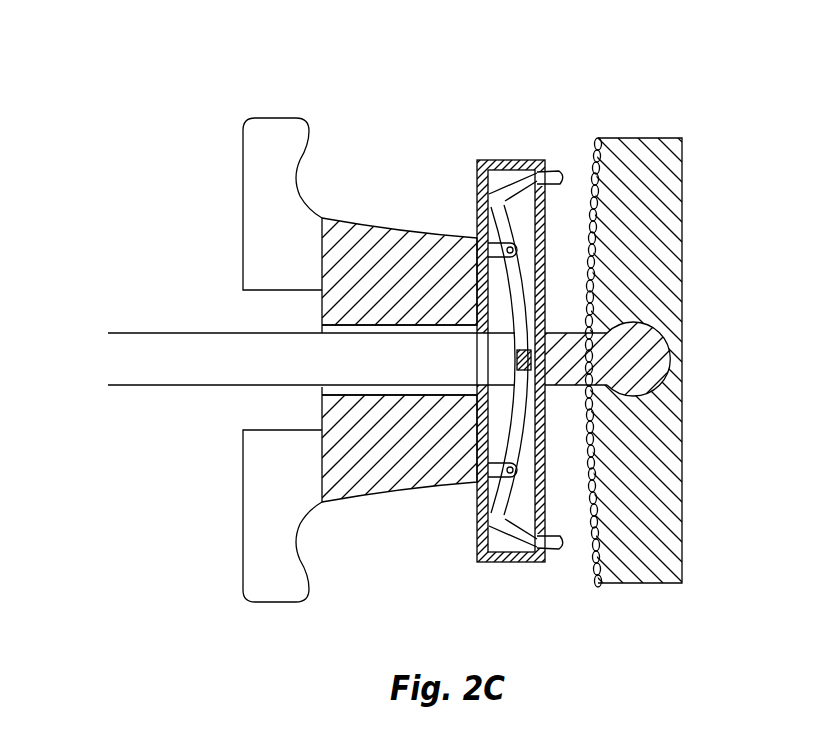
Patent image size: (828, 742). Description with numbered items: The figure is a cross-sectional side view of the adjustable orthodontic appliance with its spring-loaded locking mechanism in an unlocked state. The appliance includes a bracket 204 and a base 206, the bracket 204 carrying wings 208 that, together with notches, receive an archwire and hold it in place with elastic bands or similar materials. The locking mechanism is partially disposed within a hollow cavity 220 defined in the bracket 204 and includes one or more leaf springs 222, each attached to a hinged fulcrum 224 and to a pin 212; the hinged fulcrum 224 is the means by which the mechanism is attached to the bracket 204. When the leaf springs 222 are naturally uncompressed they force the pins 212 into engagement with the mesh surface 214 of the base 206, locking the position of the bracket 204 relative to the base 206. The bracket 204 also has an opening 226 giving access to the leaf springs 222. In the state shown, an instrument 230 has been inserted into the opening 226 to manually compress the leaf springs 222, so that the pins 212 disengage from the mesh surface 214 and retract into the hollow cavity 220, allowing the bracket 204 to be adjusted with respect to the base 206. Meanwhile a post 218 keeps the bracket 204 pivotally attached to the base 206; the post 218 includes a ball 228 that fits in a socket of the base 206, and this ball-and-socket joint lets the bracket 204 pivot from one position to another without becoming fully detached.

The bracket 204 is at (413, 291).
The base 206 is at (663, 236).
The wings 208 is at (270, 137).
The pin 212 is at (565, 168).
The mesh surface 214 is at (592, 142).
The post 218 is at (558, 388).
The hollow cavity 220 is at (502, 180).
The leaf spring 222 is at (466, 332).
The hinged fulcrum 224 is at (487, 247).
The opening 226 is at (438, 387).
The ball 228 is at (637, 355).
The instrument 230 is at (143, 373).